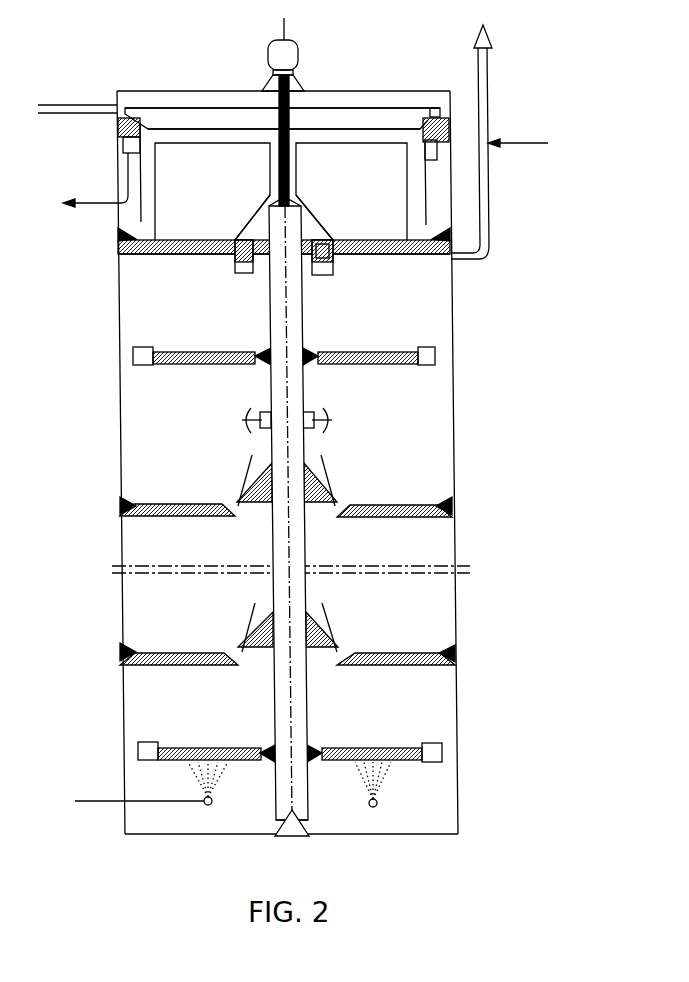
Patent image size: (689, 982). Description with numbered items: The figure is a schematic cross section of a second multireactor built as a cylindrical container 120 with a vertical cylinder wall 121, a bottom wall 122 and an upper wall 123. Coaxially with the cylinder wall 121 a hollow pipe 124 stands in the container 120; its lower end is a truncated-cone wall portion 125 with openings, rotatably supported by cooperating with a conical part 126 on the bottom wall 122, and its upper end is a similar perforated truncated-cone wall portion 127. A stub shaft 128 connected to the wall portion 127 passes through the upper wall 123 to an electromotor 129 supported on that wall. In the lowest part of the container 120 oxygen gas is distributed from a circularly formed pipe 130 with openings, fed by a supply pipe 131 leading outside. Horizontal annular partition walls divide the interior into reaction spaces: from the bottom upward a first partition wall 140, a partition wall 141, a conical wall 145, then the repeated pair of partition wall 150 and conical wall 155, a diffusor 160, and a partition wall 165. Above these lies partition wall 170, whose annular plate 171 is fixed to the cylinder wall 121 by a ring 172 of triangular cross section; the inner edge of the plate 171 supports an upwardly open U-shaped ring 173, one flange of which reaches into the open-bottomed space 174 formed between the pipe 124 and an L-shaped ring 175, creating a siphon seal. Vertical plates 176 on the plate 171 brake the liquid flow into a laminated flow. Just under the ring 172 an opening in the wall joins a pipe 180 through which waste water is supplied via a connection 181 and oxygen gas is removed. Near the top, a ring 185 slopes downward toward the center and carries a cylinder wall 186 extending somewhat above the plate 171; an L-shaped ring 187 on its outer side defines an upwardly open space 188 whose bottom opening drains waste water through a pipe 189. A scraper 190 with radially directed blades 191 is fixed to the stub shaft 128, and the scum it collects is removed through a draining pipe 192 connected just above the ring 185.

The cylindrical container 120 is at (454, 384).
The cylinder wall 121 is at (454, 437).
The bottom wall 122 is at (358, 836).
The upper wall 123 is at (346, 91).
The hollow pipe 124 is at (303, 302).
The wall portion 125 is at (309, 824).
The conical part 126 is at (280, 836).
The wall portion 127 is at (301, 204).
The stub shaft 128 is at (289, 156).
The electromotor 129 is at (297, 45).
The circularly formed pipe 130 is at (213, 801).
The supply pipe 131 is at (148, 802).
The first partition wall 140 is at (208, 752).
The partition wall 141 is at (182, 652).
The conical wall 145 is at (330, 640).
The partition wall 150 is at (182, 503).
The conical wall 155 is at (330, 497).
The diffusor 160 is at (332, 420).
The partition wall 165 is at (180, 352).
The partition wall 170 is at (182, 240).
The annular plate 171 is at (165, 252).
The ring 172 is at (120, 242).
The ring 173 is at (235, 274).
The space 174 is at (333, 267).
The ring 175 is at (333, 240).
The vertical plates 176 is at (220, 170).
The pipe 180 is at (489, 223).
The connection 181 is at (515, 143).
The ring 185 is at (433, 110).
The cylinder wall 186 is at (426, 192).
The ring 187 is at (130, 153).
The space 188 is at (118, 135).
The pipe 189 is at (83, 205).
The scraper 190 is at (220, 104).
The blades 191 is at (170, 118).
The draining pipe 192 is at (78, 104).